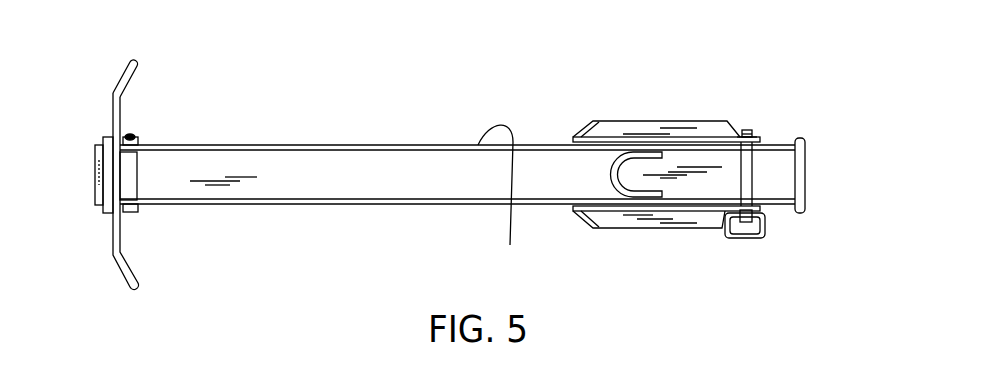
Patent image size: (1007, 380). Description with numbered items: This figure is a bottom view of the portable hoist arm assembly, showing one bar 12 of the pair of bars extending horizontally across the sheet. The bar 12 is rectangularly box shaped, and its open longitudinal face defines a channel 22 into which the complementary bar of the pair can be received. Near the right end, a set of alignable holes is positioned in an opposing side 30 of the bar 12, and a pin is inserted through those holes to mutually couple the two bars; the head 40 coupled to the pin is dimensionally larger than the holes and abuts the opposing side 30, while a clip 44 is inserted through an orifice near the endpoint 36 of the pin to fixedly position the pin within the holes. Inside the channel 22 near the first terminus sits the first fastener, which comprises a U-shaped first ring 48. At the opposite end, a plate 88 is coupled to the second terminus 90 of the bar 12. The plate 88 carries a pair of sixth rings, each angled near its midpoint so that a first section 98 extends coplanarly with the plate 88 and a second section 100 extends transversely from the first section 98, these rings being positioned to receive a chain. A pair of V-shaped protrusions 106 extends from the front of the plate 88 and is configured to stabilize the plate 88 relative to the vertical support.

The bar 12 is at (415, 165).
The channel 22 is at (290, 162).
The opposing side 30 is at (533, 204).
The endpoint 36 is at (747, 130).
The head 40 is at (747, 222).
The clip 44 is at (757, 140).
The first ring 48 is at (625, 155).
The plate 88 is at (110, 208).
The second terminus 90 is at (118, 173).
The first section 98 is at (117, 115).
The second section 100 is at (123, 72).
The protrusion 106 is at (102, 168).